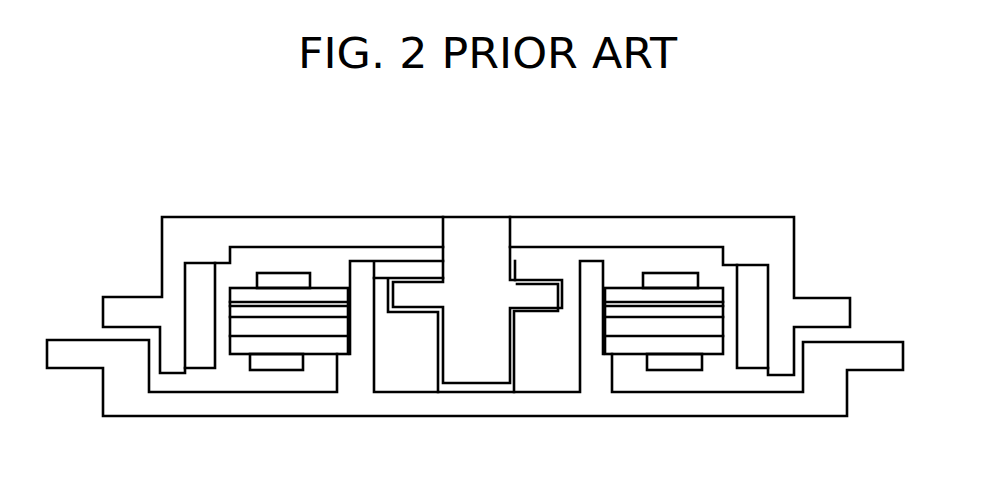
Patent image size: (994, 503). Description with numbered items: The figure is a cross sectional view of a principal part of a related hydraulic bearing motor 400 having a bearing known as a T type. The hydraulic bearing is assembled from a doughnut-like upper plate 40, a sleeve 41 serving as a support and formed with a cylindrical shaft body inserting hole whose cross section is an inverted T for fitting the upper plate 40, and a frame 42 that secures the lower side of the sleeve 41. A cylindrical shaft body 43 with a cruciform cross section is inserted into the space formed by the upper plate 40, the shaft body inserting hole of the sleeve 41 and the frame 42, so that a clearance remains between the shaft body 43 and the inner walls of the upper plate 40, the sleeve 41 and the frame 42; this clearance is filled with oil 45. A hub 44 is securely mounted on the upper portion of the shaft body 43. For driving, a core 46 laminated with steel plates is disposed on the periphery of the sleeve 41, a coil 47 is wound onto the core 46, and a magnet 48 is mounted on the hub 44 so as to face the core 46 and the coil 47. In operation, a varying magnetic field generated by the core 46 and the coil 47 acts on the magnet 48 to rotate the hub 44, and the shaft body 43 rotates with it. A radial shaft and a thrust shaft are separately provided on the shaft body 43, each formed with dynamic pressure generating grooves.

The hydraulic bearing motor 400 is at (696, 141).
The upper plate 40 is at (528, 265).
The sleeve 41 is at (567, 298).
The frame 42 is at (555, 418).
The shaft body 43 is at (473, 222).
The hub 44 is at (350, 217).
The oil 45 is at (389, 278).
The core 46 is at (617, 297).
The coil 47 is at (673, 285).
The magnet 48 is at (753, 278).